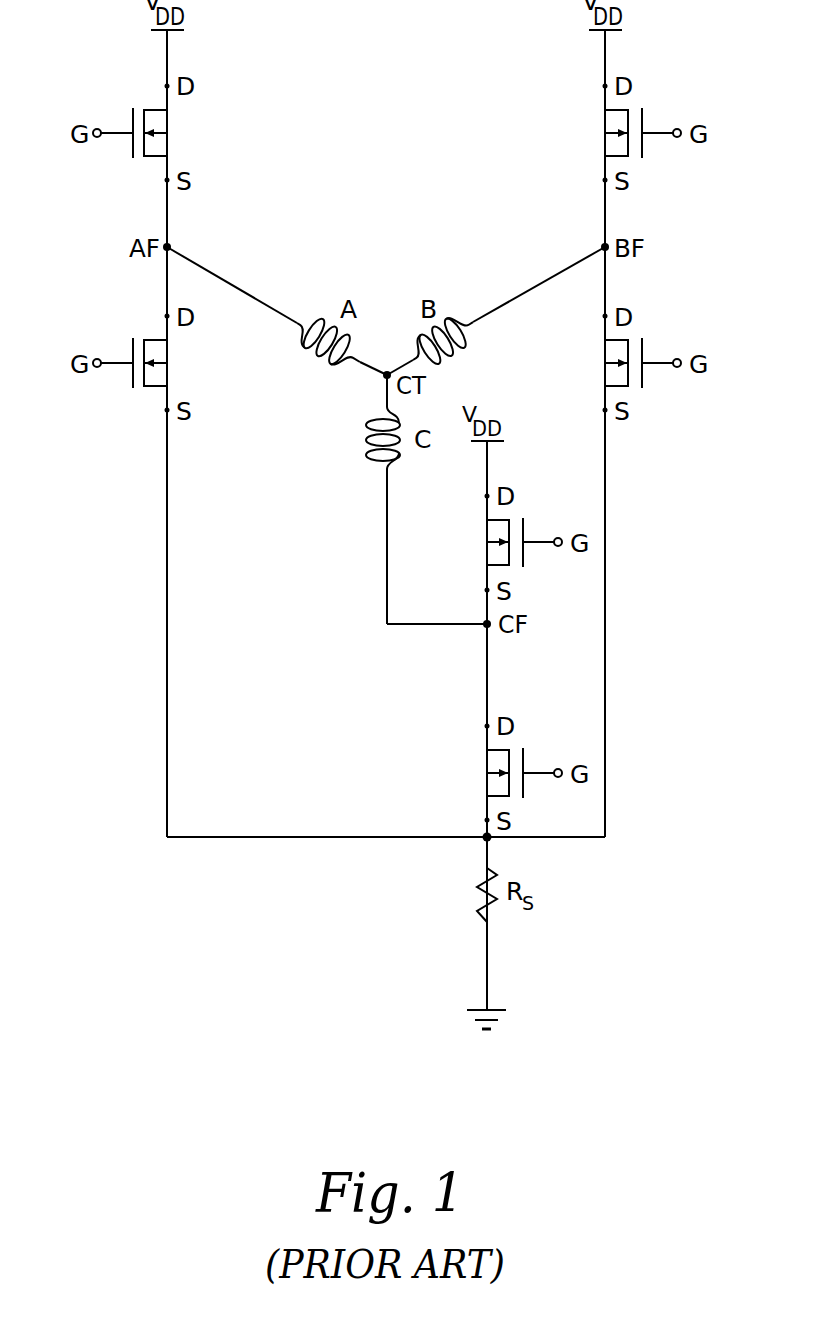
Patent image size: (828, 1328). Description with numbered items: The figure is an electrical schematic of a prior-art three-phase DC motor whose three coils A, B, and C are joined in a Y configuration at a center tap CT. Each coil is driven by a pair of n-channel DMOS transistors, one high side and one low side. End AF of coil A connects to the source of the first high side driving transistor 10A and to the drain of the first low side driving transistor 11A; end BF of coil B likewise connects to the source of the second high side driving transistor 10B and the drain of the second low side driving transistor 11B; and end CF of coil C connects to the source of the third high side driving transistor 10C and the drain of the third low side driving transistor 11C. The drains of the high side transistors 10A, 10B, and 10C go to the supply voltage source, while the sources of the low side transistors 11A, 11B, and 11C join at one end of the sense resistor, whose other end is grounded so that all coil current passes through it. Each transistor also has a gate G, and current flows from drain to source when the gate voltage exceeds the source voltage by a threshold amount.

The first high side driving transistor 10A is at (167, 111).
The second high side driving transistor 10B is at (605, 111).
The third high side driving transistor 10C is at (487, 521).
The first low side driving transistor 11A is at (167, 341).
The second low side driving transistor 11B is at (605, 341).
The third low side driving transistor 11C is at (487, 751).